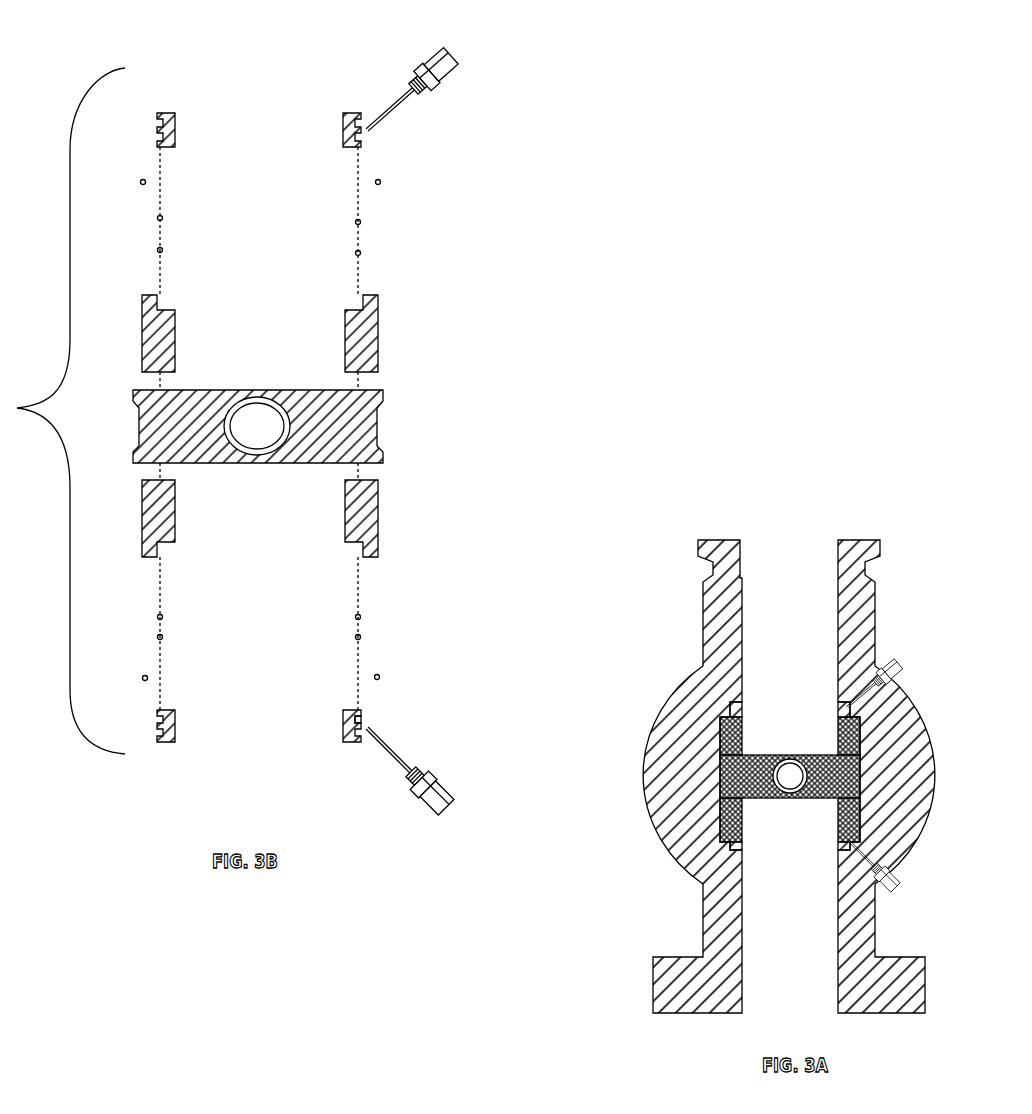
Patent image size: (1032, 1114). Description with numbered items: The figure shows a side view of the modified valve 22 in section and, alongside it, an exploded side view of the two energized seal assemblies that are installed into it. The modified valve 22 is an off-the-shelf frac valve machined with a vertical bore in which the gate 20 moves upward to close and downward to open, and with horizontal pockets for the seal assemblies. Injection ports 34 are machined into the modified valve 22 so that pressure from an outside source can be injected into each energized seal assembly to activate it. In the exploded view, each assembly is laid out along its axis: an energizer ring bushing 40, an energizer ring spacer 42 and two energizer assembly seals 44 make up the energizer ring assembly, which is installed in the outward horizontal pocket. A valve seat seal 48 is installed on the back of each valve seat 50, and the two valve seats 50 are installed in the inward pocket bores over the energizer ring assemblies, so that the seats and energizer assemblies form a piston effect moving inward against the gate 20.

In FIG. 3B, the gate 20 is at (380, 425).
In FIG. 3A, the modified valve 22 is at (590, 977).
In FIG. 3B, the injection port 34 is at (460, 52).
In FIG. 3B, the energizer ring bushing 40 is at (343, 723).
In FIG. 3B, the energizer ring spacer 42 is at (363, 725).
In FIG. 3B, the energizer assembly seal 44 is at (362, 637).
In FIG. 3B, the valve seat seal 48 is at (381, 676).
In FIG. 3B, the valve seat 50 is at (378, 512).